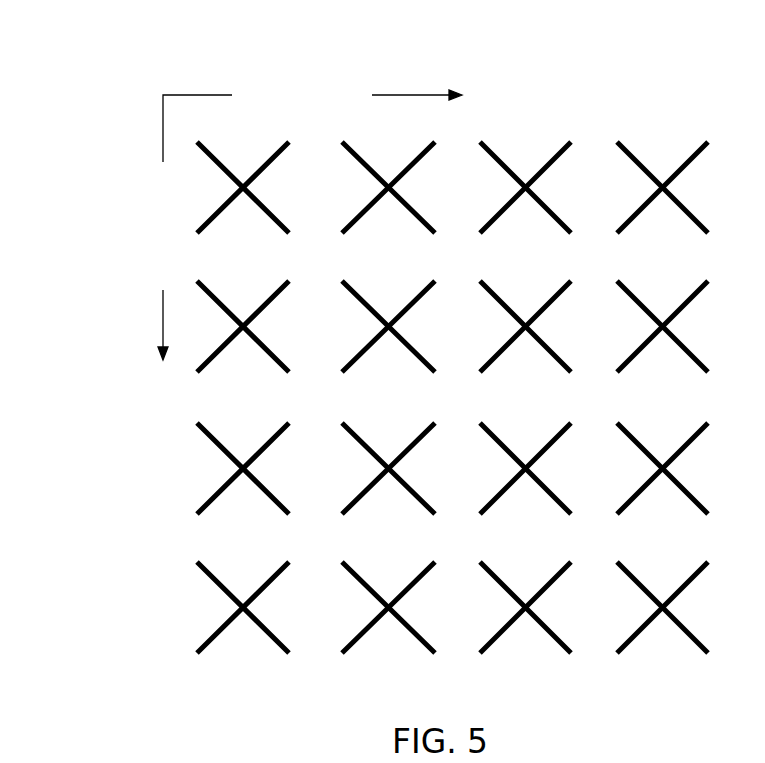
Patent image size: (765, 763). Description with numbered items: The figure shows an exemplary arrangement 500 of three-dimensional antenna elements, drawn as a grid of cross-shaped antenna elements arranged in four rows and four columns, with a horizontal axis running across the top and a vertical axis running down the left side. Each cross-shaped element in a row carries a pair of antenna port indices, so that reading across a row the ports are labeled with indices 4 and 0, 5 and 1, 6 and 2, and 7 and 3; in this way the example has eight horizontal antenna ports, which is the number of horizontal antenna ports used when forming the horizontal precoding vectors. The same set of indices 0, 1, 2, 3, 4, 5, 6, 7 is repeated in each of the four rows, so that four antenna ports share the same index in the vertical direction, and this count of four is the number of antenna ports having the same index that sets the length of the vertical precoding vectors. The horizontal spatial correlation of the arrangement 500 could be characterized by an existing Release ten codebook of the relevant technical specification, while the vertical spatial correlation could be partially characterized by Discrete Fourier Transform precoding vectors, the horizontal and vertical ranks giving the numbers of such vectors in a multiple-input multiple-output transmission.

The arrangement of three-dimensional antenna elements 500 is at (115, 80).
The sample position 0 is at (250, 386).
The sample position 1 is at (396, 386).
The sample position 2 is at (533, 386).
The sample position 3 is at (670, 386).
The sample position 4 is at (237, 386).
The sample position 5 is at (382, 386).
The sample position 6 is at (517, 386).
The sample position 7 is at (656, 386).